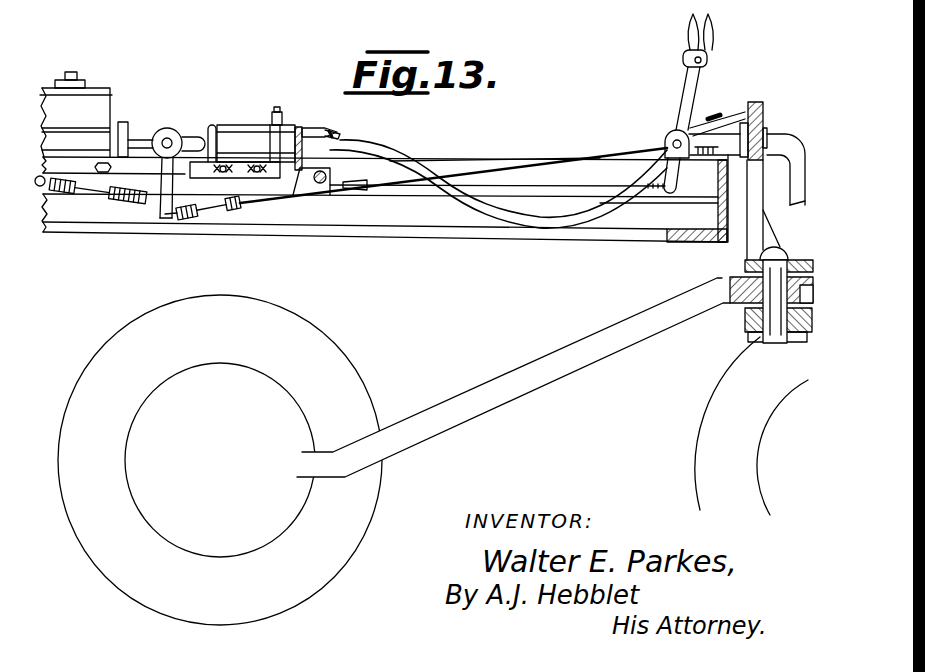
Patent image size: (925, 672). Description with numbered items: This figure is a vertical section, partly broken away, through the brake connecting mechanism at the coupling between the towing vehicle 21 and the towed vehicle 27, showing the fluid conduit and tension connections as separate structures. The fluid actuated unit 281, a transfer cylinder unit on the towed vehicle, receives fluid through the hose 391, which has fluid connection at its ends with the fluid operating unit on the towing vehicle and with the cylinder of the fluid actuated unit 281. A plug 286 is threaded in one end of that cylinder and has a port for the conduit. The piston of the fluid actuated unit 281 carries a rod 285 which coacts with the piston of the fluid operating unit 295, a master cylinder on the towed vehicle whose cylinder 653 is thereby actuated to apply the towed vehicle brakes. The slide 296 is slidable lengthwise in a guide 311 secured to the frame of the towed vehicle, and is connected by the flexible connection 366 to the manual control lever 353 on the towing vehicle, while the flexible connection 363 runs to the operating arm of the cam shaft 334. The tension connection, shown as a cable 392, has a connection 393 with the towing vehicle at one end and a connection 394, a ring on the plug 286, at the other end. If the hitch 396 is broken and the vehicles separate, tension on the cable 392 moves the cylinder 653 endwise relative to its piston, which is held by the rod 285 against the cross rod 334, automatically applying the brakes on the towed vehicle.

The towing vehicle 21 is at (776, 118).
The towed vehicle 27 is at (424, 243).
The fluid actuated unit 281 is at (243, 124).
The rod 285 is at (131, 140).
The plug 286 is at (310, 128).
The fluid operating unit 295 is at (100, 86).
The slide 296 is at (219, 162).
The guide 311 is at (308, 200).
The cam shaft 334 is at (176, 135).
The lever 353 is at (712, 59).
The flexible connection 363 is at (467, 178).
The flexible connection 366 is at (543, 184).
The hose 391 is at (370, 150).
The cable 392 is at (412, 160).
The connection 393 is at (735, 110).
The connection 394 is at (326, 130).
The hitch 396 is at (742, 314).
The cylinder 653 is at (120, 126).